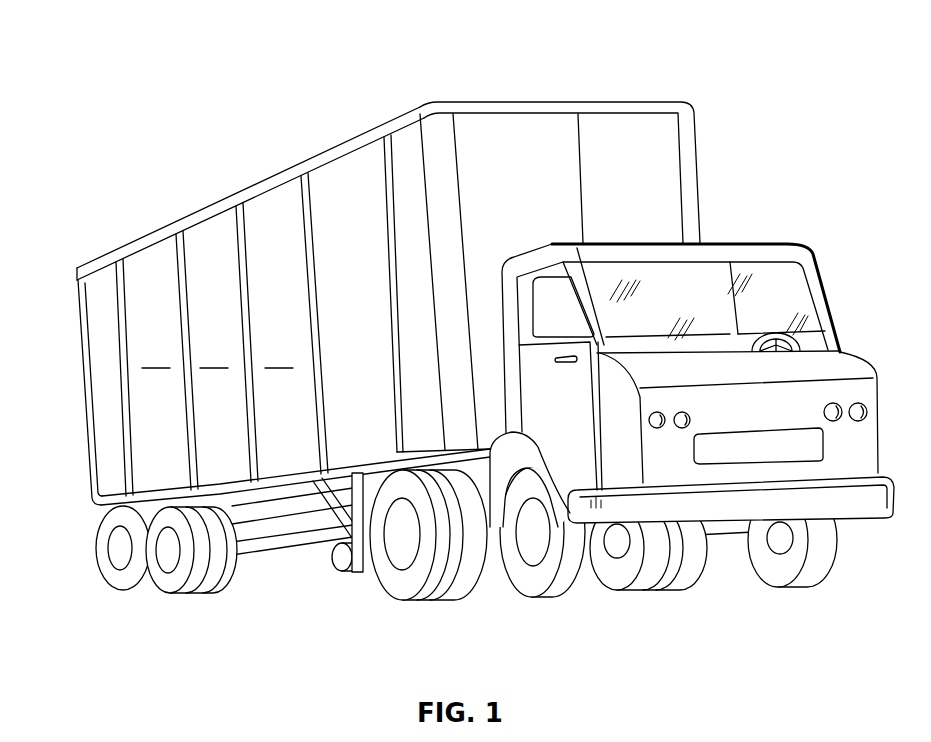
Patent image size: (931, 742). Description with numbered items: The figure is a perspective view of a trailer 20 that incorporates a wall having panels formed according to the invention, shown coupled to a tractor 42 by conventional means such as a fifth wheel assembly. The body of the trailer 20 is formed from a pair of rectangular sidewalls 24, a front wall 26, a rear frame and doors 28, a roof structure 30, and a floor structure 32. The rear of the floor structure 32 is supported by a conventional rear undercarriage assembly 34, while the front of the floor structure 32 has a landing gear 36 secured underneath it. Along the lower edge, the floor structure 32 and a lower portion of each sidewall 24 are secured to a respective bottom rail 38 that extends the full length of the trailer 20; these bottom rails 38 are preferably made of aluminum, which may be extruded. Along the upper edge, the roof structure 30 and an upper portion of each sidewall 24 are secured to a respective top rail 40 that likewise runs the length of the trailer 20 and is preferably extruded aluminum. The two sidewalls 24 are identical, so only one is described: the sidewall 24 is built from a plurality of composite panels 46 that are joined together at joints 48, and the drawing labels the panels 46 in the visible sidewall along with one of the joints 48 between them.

The trailer 20 is at (104, 68).
The sidewall 24 is at (277, 233).
The front wall 26 is at (670, 173).
The rear frame and doors 28 is at (83, 383).
The roof structure 30 is at (493, 100).
The floor structure 32 is at (97, 505).
The rear undercarriage assembly 34 is at (170, 585).
The landing gear 36 is at (337, 520).
The bottom rail 38 is at (297, 477).
The top rail 40 is at (132, 245).
The tractor 42 is at (740, 248).
The composite panel 46 is at (204, 349).
The joint 48 is at (308, 222).